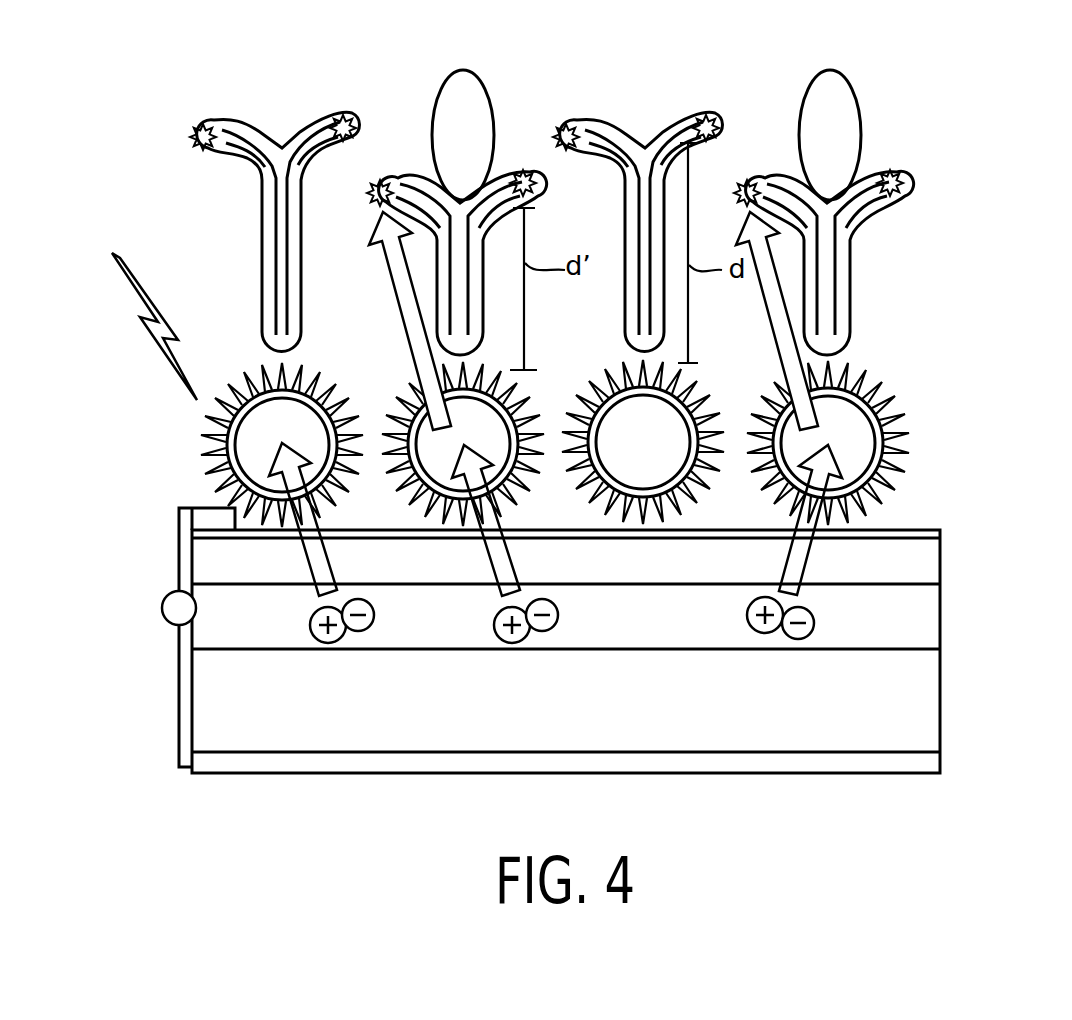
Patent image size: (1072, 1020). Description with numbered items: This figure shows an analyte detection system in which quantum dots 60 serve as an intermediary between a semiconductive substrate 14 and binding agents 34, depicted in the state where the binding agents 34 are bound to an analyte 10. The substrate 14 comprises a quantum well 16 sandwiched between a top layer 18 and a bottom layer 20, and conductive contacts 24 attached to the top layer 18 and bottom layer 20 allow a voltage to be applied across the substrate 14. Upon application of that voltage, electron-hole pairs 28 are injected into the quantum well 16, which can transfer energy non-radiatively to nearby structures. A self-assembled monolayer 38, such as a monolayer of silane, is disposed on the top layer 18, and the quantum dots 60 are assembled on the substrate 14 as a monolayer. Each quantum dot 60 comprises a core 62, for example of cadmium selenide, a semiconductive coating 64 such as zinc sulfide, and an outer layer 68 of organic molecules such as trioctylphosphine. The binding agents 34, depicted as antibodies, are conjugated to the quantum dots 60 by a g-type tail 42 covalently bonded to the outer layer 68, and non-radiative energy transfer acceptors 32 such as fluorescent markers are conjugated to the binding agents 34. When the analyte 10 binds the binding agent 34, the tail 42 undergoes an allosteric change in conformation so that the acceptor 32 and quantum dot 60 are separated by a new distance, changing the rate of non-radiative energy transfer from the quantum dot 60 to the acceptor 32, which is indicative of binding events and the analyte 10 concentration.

The analyte 10 is at (833, 101).
The semiconductive substrate 14 is at (112, 493).
The quantum well 16 is at (927, 625).
The top layer 18 is at (927, 558).
The bottom layer 20 is at (927, 705).
The conductive contacts 24 is at (880, 768).
The electron-hole pairs 28 is at (776, 650).
The non-radiative energy transfer acceptor 32 is at (744, 182).
The binding agent 34 is at (855, 268).
The self-assembled monolayer 38 is at (913, 530).
The g-type tail 42 is at (862, 305).
The quantum dot 60 is at (920, 465).
The core 62 is at (843, 418).
The semiconductive coating 64 is at (758, 395).
The outer layer 68 is at (408, 420).